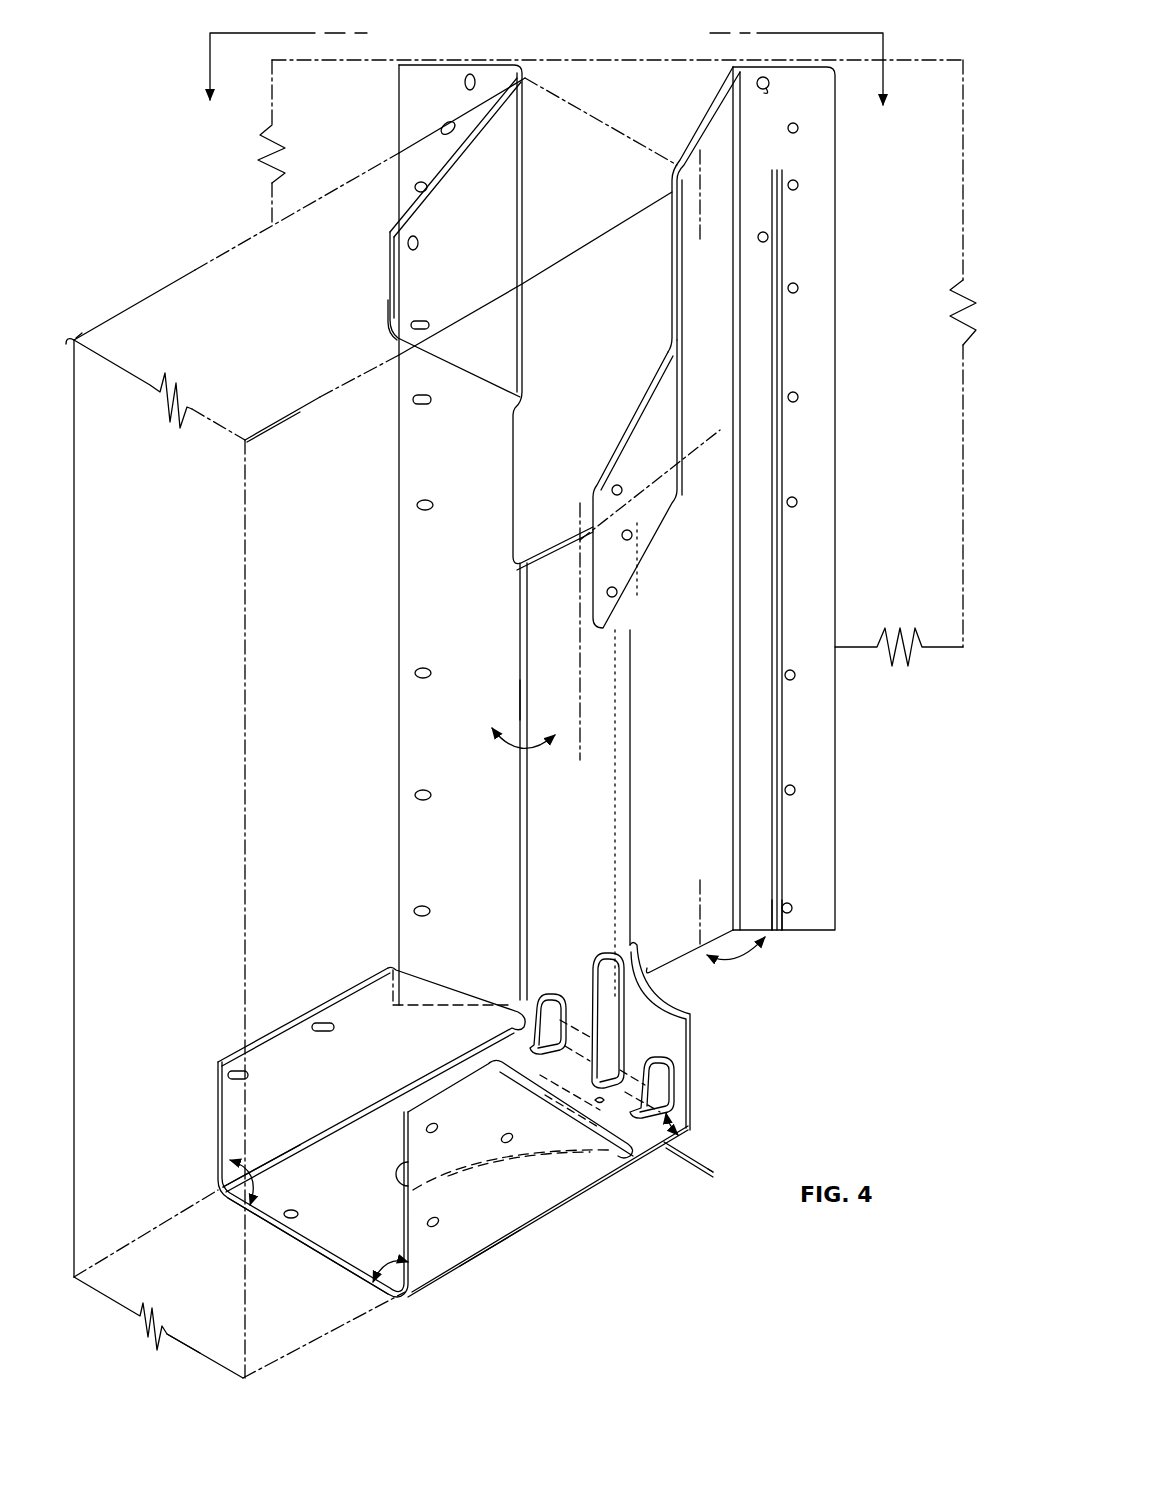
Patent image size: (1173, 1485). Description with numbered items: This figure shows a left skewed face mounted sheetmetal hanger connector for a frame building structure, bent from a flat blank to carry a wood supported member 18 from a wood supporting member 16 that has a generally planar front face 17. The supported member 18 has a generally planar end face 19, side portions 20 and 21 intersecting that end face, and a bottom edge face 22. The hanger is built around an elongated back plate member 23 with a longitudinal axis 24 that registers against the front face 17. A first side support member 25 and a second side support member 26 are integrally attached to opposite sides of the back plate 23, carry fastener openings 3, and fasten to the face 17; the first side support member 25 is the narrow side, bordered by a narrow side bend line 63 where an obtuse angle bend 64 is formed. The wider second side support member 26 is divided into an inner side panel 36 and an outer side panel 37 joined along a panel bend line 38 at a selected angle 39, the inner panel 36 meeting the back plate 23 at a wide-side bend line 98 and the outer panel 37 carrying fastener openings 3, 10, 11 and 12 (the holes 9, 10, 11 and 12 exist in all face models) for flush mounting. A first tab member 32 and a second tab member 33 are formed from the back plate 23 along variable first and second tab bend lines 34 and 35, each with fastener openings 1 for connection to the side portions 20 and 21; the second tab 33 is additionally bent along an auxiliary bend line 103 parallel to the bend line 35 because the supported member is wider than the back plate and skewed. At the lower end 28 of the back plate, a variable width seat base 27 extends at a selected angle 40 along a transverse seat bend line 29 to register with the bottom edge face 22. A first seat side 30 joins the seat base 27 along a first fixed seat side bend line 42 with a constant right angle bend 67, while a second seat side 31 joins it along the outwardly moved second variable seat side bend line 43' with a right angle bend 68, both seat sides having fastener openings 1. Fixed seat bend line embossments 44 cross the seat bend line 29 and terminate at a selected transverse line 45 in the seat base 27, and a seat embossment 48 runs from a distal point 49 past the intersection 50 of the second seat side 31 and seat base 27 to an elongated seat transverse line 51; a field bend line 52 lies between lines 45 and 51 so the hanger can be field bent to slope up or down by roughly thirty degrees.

The fastener openings 1 is at (418, 240).
The fastener openings 3 is at (432, 400).
The holes 9 is at (421, 186).
The fastener openings 10 is at (810, 167).
The fastener openings 11 is at (446, 125).
The fastener openings 12 is at (464, 82).
The wood supporting member 16 is at (938, 60).
The front face 17 is at (918, 207).
The wood supported member 18 is at (190, 270).
The end face 19 is at (646, 142).
The side portion 20 is at (86, 328).
The side portion 21 is at (272, 466).
The bottom edge face 22 is at (195, 1352).
The back plate member 23 is at (560, 792).
The longitudinal axis 24 is at (582, 663).
The first side support member 25 is at (396, 595).
The second side support member 26 is at (838, 516).
The seat base 27 is at (330, 1245).
The end of back plate 28 is at (552, 978).
The seat bend line 29 is at (694, 1130).
The first seat side 30 is at (216, 1118).
The second seat side 31 is at (406, 1136).
The first tab member 32 is at (390, 316).
The second tab member 33 is at (592, 512).
The first tab bend line 34 is at (524, 210).
The second tab bend line 35 is at (680, 228).
The inner side panel 36 is at (678, 960).
The outer side panel 37 is at (810, 934).
The panel bend line 38 is at (733, 756).
The selected angle 39 is at (736, 962).
The selected angle 40 is at (670, 1134).
The first fixed seat side bend line 42 is at (316, 1137).
The second variable seat side bend line 43' is at (513, 1248).
The fixed seat bend line embossments 44 is at (540, 1000).
The selected transverse line 45 is at (714, 1162).
The seat embossment 48 is at (455, 1166).
The distal point 49 is at (393, 1186).
The intersection 50 is at (540, 1157).
The elongated seat transverse line 51 is at (600, 1104).
The field bend line 52 is at (704, 1180).
The narrow side bend line 63 is at (525, 702).
The obtuse angle bend 64 is at (512, 752).
The constant right angle bend 67 is at (247, 1173).
The right angle bend 68 is at (380, 1263).
The wide-side bend line 98 is at (634, 752).
The auxiliary bend line 103 is at (668, 478).